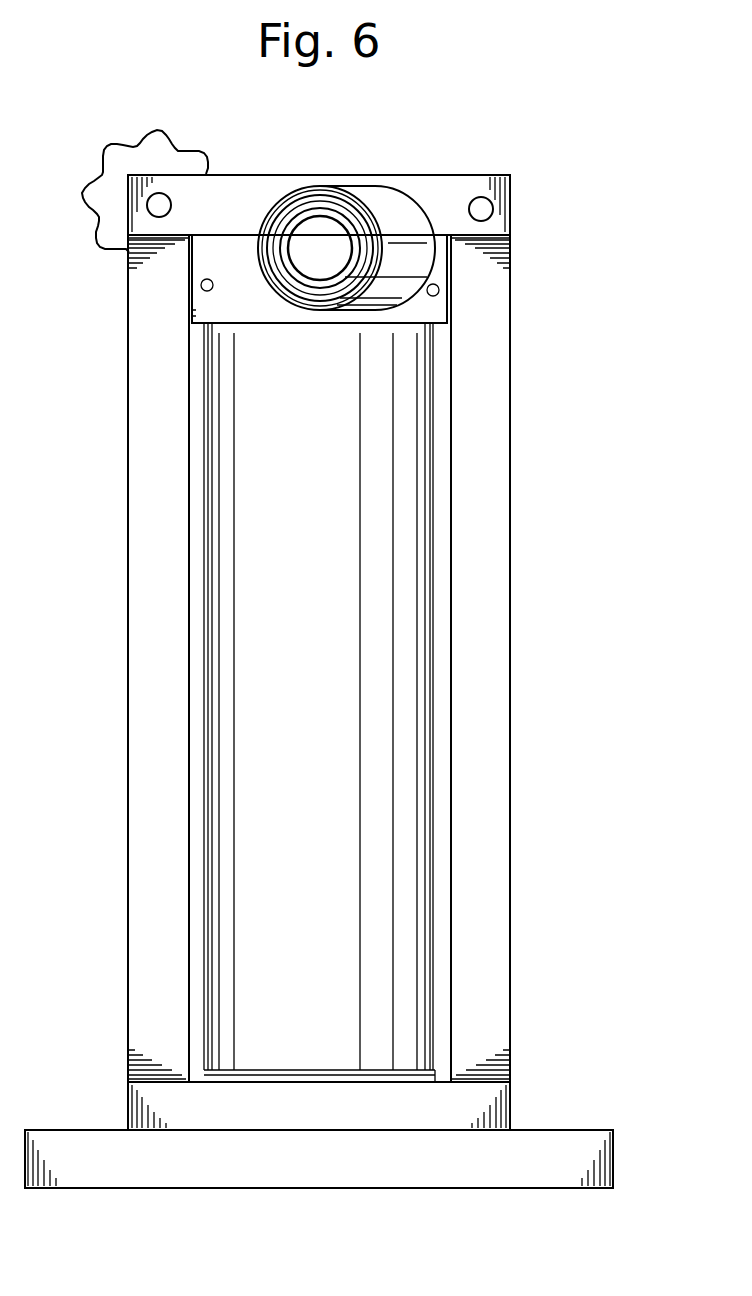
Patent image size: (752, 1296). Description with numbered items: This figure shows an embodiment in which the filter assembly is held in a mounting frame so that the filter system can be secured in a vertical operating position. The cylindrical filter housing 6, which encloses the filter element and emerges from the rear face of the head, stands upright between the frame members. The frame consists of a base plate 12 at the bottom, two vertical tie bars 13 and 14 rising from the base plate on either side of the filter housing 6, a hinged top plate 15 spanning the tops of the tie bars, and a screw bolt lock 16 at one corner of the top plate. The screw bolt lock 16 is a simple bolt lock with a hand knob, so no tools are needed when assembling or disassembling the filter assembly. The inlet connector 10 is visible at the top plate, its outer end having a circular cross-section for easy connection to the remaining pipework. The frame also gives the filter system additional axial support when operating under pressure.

The filter housing 6 is at (408, 810).
The inlet connector 10 is at (370, 200).
The base plate 12 is at (560, 1155).
The vertical tie bar 13 is at (495, 655).
The vertical tie bar 14 is at (143, 650).
The hinged top plate 15 is at (482, 189).
The screw bolt lock 16 is at (159, 205).